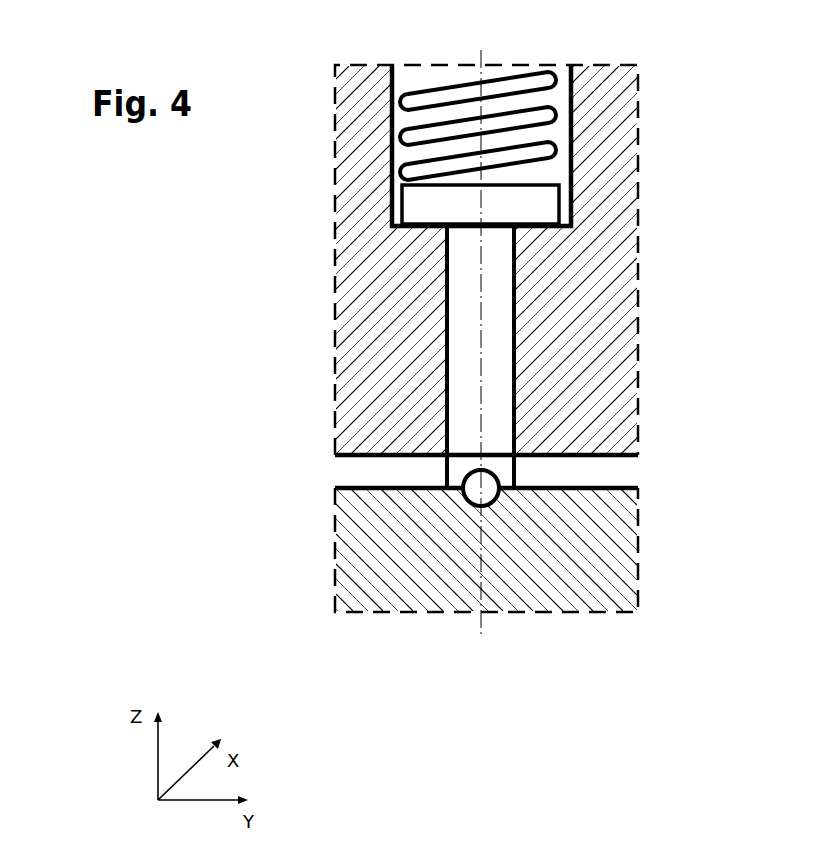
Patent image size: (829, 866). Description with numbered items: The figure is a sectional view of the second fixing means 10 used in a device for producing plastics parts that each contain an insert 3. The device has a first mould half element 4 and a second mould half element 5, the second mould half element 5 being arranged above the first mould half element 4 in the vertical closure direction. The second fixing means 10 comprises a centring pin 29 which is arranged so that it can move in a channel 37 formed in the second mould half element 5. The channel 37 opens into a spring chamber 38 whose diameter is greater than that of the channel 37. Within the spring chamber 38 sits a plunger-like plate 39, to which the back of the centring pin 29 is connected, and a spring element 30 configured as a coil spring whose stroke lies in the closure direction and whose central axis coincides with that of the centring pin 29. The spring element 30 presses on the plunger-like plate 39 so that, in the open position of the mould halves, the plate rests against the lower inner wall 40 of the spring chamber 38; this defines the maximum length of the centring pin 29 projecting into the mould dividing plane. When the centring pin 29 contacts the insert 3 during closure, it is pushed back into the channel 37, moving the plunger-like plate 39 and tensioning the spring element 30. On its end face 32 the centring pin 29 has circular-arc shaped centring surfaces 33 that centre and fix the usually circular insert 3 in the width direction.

The insert 3 is at (487, 495).
The first mould half element 4 is at (625, 543).
The second mould half element 5 is at (620, 130).
The second fixing means 10 is at (481, 318).
The centring pin 29 is at (497, 397).
The spring element 30 is at (520, 72).
The end face 32 is at (440, 492).
The centring surfaces 33 is at (497, 465).
The channel 37 is at (445, 345).
The spring chamber 38 is at (405, 122).
The plunger-like plate 39 is at (410, 203).
The lower inner wall 40 is at (557, 228).